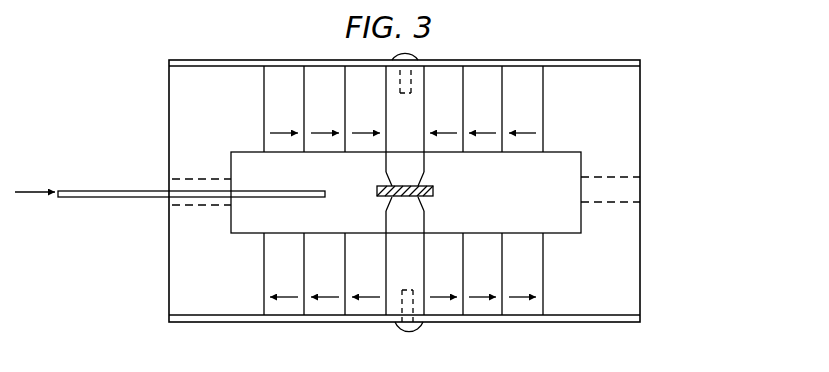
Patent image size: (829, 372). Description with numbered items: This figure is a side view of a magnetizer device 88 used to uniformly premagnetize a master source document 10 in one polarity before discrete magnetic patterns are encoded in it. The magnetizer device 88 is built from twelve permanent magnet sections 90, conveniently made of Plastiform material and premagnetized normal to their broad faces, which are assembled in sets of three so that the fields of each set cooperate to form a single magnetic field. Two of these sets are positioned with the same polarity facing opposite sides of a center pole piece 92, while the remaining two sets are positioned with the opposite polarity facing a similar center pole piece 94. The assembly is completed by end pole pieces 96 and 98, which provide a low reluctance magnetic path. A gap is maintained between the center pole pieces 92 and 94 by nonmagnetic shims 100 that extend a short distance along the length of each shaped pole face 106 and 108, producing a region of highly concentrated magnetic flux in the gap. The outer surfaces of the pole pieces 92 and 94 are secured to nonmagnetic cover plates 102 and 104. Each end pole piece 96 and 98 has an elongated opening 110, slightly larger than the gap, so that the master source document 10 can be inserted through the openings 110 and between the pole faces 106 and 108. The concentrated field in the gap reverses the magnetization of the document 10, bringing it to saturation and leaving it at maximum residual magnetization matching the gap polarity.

The master source document 10 is at (115, 190).
The magnetizer device 88 is at (652, 97).
The permanent magnet sections 90 is at (295, 105).
The center pole piece 92 is at (417, 127).
The center pole piece 94 is at (417, 280).
The end pole piece 96 is at (222, 125).
The end pole piece 98 is at (603, 125).
The nonmagnetic shims 100 is at (434, 191).
The nonmagnetic cover plate 102 is at (287, 62).
The nonmagnetic cover plate 104 is at (323, 320).
The pole face 106 is at (391, 185).
The pole face 108 is at (386, 201).
The elongated opening 110 is at (168, 198).